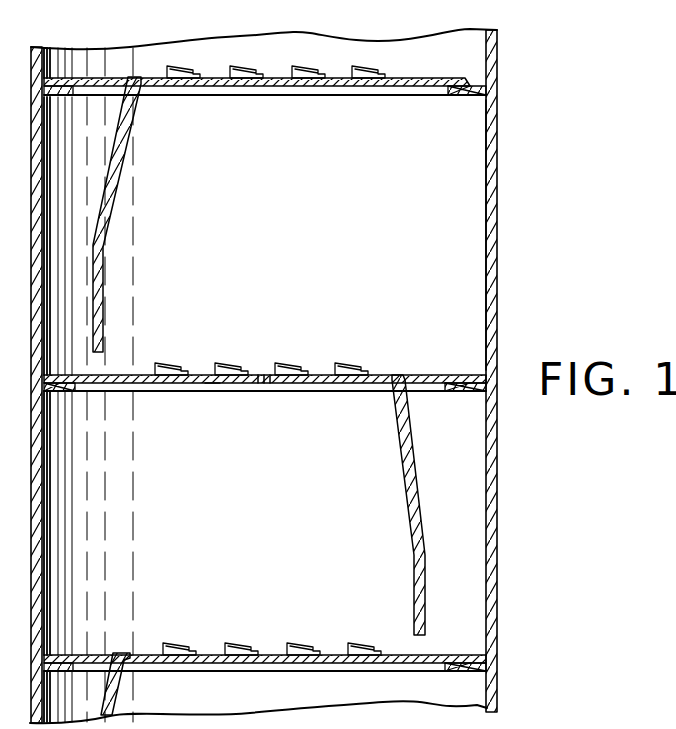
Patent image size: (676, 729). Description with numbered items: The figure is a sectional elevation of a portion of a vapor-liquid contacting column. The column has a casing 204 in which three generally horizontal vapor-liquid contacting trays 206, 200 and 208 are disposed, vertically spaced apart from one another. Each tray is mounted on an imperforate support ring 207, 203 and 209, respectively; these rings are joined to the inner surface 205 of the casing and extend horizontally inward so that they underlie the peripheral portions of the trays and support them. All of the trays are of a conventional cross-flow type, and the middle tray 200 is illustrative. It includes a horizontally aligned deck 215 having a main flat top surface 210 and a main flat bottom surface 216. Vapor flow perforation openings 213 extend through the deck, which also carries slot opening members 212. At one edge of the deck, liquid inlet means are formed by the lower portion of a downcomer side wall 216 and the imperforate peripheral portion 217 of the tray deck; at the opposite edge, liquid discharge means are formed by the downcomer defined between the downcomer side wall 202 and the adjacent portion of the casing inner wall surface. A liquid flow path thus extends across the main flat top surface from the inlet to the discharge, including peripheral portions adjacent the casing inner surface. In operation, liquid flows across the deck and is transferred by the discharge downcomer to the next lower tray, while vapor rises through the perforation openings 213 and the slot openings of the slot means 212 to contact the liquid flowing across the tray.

The vapor-liquid contacting tray 200 is at (218, 333).
The downcomer side wall 202 is at (405, 490).
The imperforate support ring 203 is at (473, 395).
The casing 204 is at (497, 203).
The inner surface of the casing 205 is at (486, 297).
The vapor-liquid contacting tray 206 is at (217, 64).
The imperforate support ring 207 is at (470, 90).
The vapor-liquid contacting tray 208 is at (215, 638).
The imperforate support ring 209 is at (462, 670).
The main flat top surface 210 is at (268, 372).
The slot opening members 212 is at (342, 372).
The vapor flow perforation openings 213 is at (322, 392).
The deck 215 is at (252, 394).
The downcomer side wall 216 is at (104, 243).
The imperforate peripheral portion of the tray deck 217 is at (75, 372).